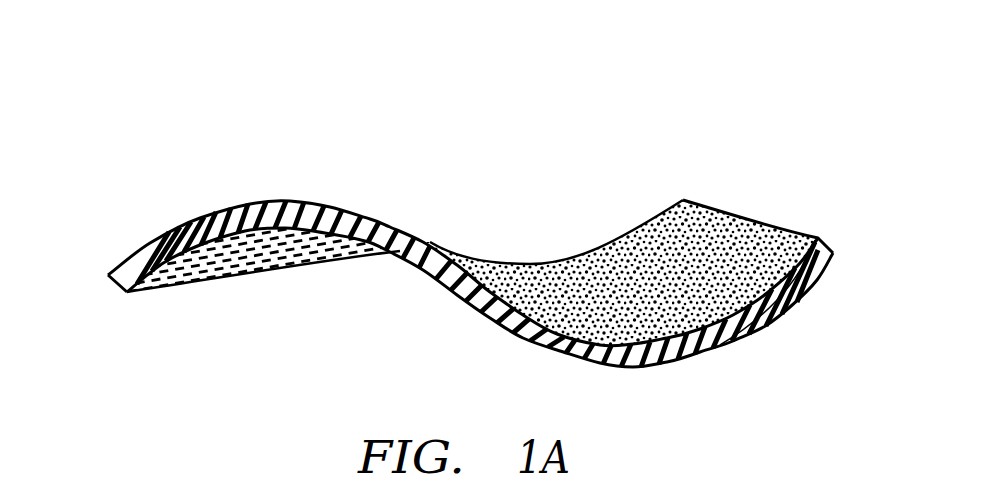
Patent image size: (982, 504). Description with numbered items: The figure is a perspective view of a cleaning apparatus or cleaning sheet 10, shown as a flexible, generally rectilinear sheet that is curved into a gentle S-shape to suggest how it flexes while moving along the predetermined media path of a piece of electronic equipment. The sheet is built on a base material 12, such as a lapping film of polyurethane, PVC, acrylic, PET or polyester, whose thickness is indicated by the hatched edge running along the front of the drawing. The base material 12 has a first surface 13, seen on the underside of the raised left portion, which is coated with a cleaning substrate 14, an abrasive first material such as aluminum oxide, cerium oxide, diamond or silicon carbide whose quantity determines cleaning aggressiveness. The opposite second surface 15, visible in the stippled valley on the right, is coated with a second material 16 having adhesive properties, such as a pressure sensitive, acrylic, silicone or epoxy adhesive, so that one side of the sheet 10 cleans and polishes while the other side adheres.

The cleaning sheet 10 is at (592, 147).
The base material 12 is at (753, 318).
The first surface 13 is at (148, 291).
The cleaning substrate 14 is at (213, 273).
The second surface 15 is at (689, 198).
The second material 16 is at (782, 243).